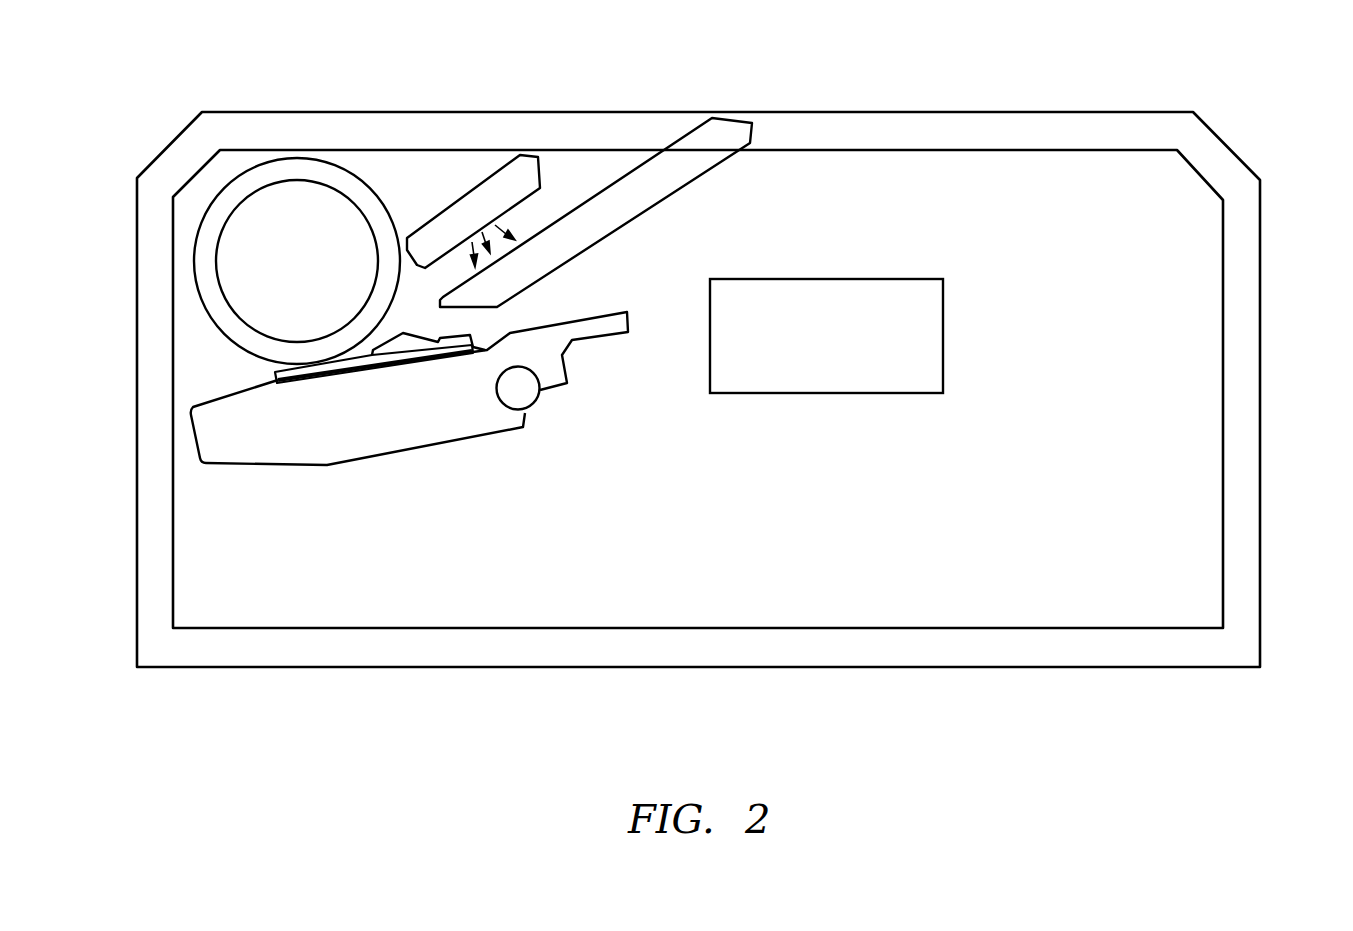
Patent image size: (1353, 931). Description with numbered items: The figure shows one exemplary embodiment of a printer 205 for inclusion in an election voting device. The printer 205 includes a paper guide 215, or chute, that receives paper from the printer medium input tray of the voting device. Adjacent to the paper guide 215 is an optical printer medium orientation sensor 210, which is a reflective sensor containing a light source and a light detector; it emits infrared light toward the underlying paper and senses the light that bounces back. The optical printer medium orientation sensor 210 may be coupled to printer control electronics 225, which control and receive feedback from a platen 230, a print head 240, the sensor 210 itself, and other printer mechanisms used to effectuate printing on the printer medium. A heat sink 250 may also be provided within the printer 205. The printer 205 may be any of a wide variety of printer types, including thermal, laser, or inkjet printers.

The printer 205 is at (936, 111).
The optical printer medium orientation sensor 210 is at (477, 178).
The paper guide 215 is at (642, 167).
The printer control electronics 225 is at (943, 334).
The platen 230 is at (302, 158).
The print head 240 is at (278, 380).
The heat sink 250 is at (197, 438).